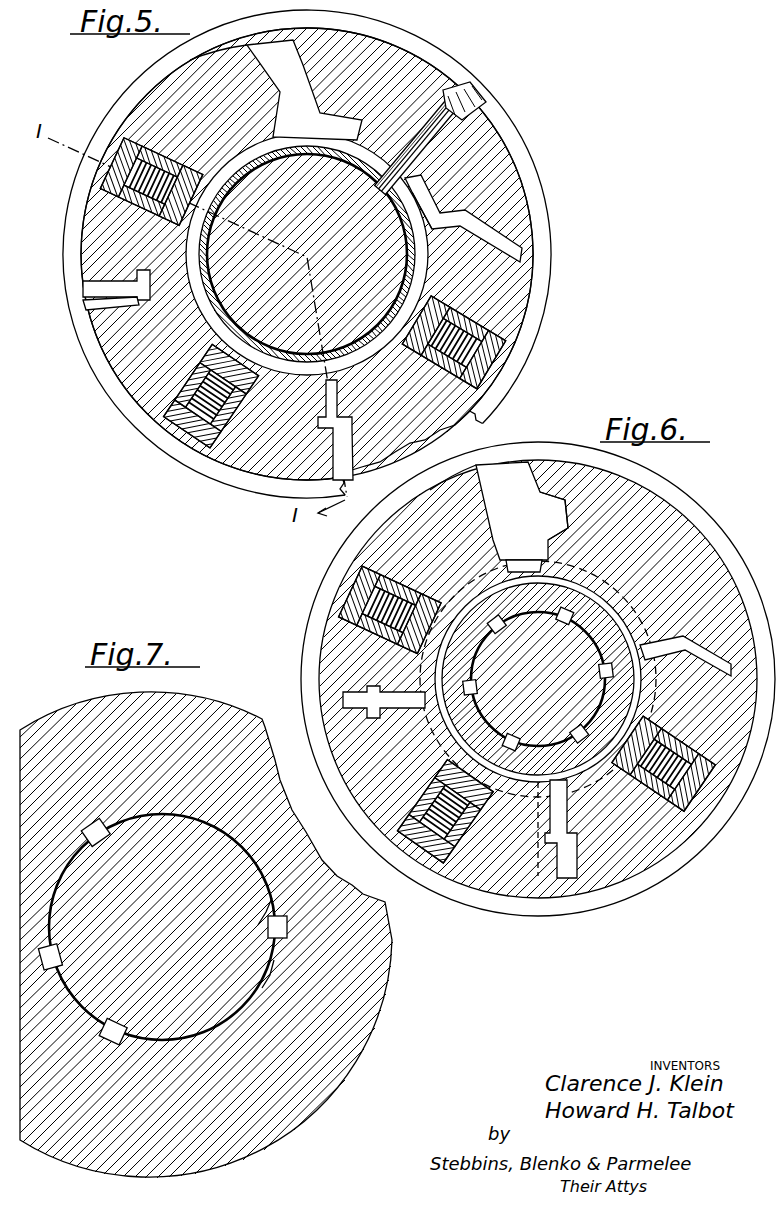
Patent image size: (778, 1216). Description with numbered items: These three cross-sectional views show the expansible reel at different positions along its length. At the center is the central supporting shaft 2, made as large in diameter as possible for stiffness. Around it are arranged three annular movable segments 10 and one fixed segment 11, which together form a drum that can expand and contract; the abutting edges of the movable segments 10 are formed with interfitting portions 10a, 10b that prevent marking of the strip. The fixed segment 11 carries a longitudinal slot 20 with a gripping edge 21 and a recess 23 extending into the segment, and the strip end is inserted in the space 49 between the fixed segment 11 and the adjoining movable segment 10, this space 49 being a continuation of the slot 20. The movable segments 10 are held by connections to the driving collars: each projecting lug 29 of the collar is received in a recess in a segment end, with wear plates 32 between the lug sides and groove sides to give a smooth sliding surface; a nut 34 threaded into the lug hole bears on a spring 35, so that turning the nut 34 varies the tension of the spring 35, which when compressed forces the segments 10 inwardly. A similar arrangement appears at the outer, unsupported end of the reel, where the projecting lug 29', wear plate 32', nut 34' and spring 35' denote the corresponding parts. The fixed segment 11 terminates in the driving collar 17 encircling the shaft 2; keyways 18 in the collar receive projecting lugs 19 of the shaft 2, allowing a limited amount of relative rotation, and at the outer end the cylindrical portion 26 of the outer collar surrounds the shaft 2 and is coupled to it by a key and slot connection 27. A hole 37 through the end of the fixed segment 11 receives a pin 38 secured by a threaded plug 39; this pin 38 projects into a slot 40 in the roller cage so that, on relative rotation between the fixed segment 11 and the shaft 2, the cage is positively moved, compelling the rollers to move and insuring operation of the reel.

In FIG. 5, the central supporting shaft 2 is at (372, 266).
In FIG. 6, the central supporting shaft 2 is at (538, 679).
In FIG. 7, the central supporting shaft 2 is at (162, 929).
In FIG. 5, the movable segment 10 is at (92, 268).
In FIG. 5, the interfitting portion 10a is at (96, 306).
In FIG. 6, the interfitting portion 10a is at (577, 863).
In FIG. 5, the interfitting portion 10b is at (90, 289).
In FIG. 6, the interfitting portion 10b is at (557, 840).
In FIG. 5, the fixed segment 11 is at (518, 222).
In FIG. 6, the fixed segment 11 is at (677, 553).
In FIG. 7, the driving collar 17 is at (80, 710).
In FIG. 7, the keyway 18 is at (272, 898).
In FIG. 7, the projecting lug 19 is at (272, 972).
In FIG. 5, the longitudinal slot 20 is at (395, 70).
In FIG. 6, the longitudinal slot 20 is at (548, 500).
In FIG. 5, the gripping edge 21 is at (304, 90).
In FIG. 6, the recess 23 is at (620, 493).
In FIG. 6, the cylindrical portion 26 is at (520, 780).
In FIG. 6, the key and slot connection 27 is at (530, 575).
In FIG. 5, the projecting lug 29 is at (299, 310).
In FIG. 6, the projecting lug 29' is at (476, 712).
In FIG. 5, the wear plate 32 is at (240, 235).
In FIG. 6, the wear plate 32' is at (463, 702).
In FIG. 5, the nut 34 is at (285, 309).
In FIG. 6, the nut 34' is at (491, 714).
In FIG. 5, the spring 35 is at (259, 288).
In FIG. 6, the spring 35' is at (481, 711).
In FIG. 5, the hole 37 is at (447, 134).
In FIG. 5, the pin 38 is at (423, 153).
In FIG. 5, the threaded plug 39 is at (470, 108).
In FIG. 5, the slot 40 is at (393, 193).
In FIG. 5, the space 49 is at (247, 52).
In FIG. 6, the space 49 is at (522, 472).